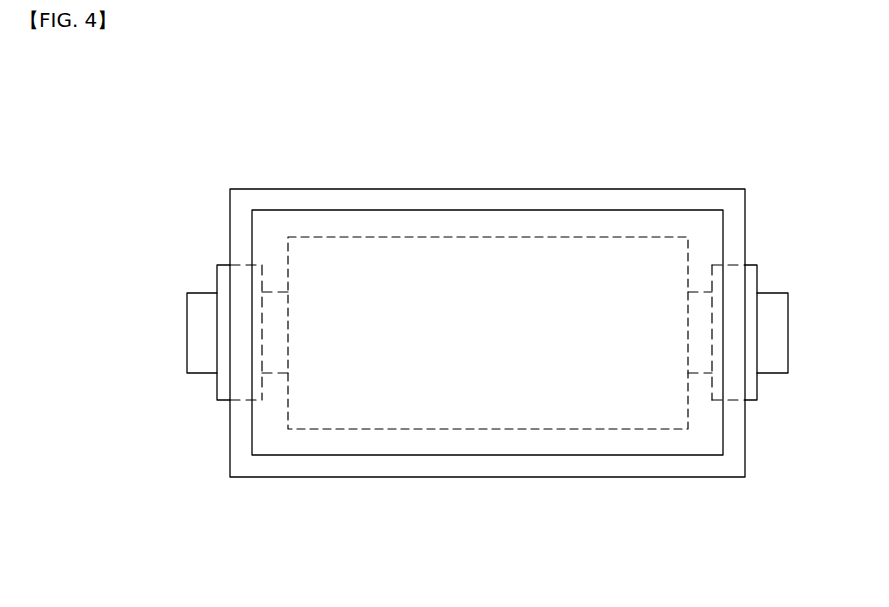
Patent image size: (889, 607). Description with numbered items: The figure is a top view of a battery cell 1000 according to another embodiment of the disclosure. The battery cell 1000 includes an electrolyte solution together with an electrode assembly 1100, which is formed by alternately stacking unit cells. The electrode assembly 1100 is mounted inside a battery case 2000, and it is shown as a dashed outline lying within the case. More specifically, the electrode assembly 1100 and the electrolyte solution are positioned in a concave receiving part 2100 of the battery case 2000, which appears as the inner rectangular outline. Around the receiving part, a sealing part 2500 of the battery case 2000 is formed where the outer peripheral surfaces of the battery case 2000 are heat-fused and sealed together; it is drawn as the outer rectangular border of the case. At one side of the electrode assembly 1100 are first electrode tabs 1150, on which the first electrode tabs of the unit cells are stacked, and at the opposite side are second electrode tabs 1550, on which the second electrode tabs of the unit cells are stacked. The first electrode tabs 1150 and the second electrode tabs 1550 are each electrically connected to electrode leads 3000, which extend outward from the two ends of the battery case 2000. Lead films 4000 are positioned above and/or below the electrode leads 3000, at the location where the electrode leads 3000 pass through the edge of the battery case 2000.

The battery cell 1000 is at (402, 73).
The electrode assembly 1100 is at (514, 237).
The first electrode tabs 1150 is at (280, 352).
The second electrode tabs 1550 is at (695, 352).
The battery case 2000 is at (487, 388).
The concave receiving part 2100 is at (497, 545).
The sealing part 2500 is at (476, 468).
The electrode leads 3000 is at (187, 329).
The lead films 4000 is at (222, 391).